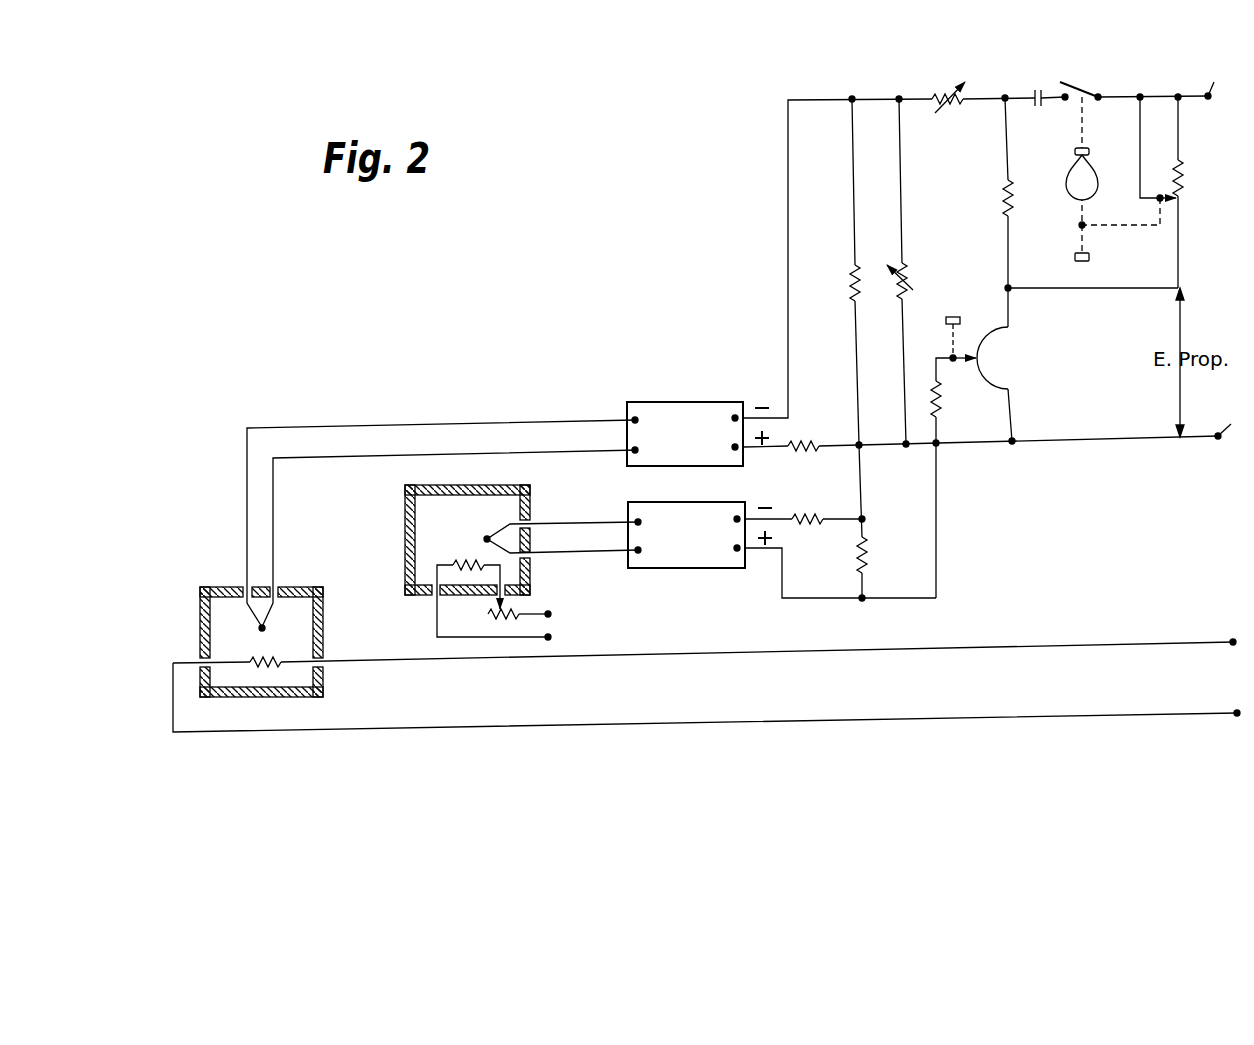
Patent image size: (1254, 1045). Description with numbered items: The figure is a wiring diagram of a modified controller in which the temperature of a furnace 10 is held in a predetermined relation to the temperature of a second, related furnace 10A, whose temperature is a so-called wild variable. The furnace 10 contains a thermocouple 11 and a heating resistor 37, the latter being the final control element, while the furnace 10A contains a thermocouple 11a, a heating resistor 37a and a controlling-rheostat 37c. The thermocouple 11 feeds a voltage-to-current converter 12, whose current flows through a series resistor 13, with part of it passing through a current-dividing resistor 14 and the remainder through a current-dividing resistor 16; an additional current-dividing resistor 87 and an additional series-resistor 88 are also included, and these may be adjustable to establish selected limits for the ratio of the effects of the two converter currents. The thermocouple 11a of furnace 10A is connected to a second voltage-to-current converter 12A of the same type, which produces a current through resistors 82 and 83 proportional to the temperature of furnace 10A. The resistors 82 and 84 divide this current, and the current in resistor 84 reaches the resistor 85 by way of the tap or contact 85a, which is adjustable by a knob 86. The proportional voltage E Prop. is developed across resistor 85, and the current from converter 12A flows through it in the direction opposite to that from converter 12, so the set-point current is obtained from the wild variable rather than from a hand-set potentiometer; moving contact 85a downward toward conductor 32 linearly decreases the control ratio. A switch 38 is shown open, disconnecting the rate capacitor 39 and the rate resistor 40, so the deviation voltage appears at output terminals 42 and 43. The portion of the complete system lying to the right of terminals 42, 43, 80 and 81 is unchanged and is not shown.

The furnace 10 is at (177, 570).
The thermocouple 11 is at (253, 615).
The heating resistor 37 is at (276, 657).
The furnace 10A is at (524, 481).
The thermocouple 11a is at (485, 537).
The heating resistor 37a is at (455, 561).
The controlling-rheostat 37c is at (512, 612).
The voltage-to-current converter 12 is at (698, 407).
The voltage-to-current converter 12A is at (703, 556).
The series resistor 13 is at (799, 439).
The current-dividing resistor 14 is at (852, 279).
The current-dividing resistor 16 is at (1003, 198).
The conductor 32 is at (1076, 443).
The switch 38 is at (1083, 90).
The rate capacitor 39 is at (1036, 88).
The rate resistor 40 is at (1185, 178).
The output terminal 42 is at (1218, 75).
The output terminal 43 is at (1212, 449).
The terminal 80 is at (1231, 640).
The terminal 81 is at (1235, 711).
The current-dividing resistor 82 is at (867, 553).
The resistor 83 is at (809, 522).
The current-dividing resistor 84 is at (941, 402).
The resistor 85 is at (984, 342).
The tap or contact 85a is at (961, 354).
The knob 86 is at (948, 317).
The current-dividing resistor 87 is at (906, 277).
The series-resistor 88 is at (944, 80).